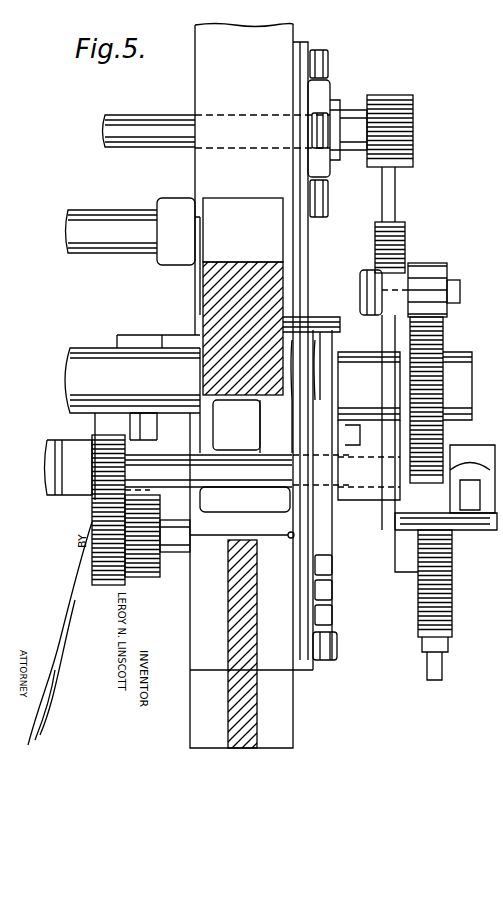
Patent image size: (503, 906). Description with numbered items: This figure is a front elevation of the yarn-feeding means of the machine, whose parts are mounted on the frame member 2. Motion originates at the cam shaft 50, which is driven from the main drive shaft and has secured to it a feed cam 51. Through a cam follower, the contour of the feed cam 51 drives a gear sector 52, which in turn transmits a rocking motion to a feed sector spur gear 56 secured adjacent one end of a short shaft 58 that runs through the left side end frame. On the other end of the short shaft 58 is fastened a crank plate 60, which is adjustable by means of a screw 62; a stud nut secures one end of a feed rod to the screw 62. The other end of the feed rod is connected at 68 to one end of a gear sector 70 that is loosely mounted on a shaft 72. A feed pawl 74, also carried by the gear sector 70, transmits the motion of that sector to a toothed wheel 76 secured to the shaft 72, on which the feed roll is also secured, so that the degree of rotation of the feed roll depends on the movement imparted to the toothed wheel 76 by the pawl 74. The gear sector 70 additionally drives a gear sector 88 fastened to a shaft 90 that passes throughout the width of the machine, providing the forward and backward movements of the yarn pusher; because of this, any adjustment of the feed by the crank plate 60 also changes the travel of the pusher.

The frame member 2 is at (247, 262).
The shaft 72 is at (88, 348).
The shaft 90 is at (361, 152).
The gear sector 88 is at (405, 226).
The gear sector 70 is at (372, 268).
The feed pawl 74 is at (433, 263).
The toothed wheel 76 is at (443, 340).
The connection 68 is at (452, 532).
The crank plate 60 is at (452, 583).
The screw 62 is at (442, 672).
The gear sector 52 is at (148, 432).
The cam shaft 50 is at (237, 483).
The feed cam 51 is at (118, 585).
The feed sector spur gear 56 is at (160, 572).
The short shaft 58 is at (173, 520).